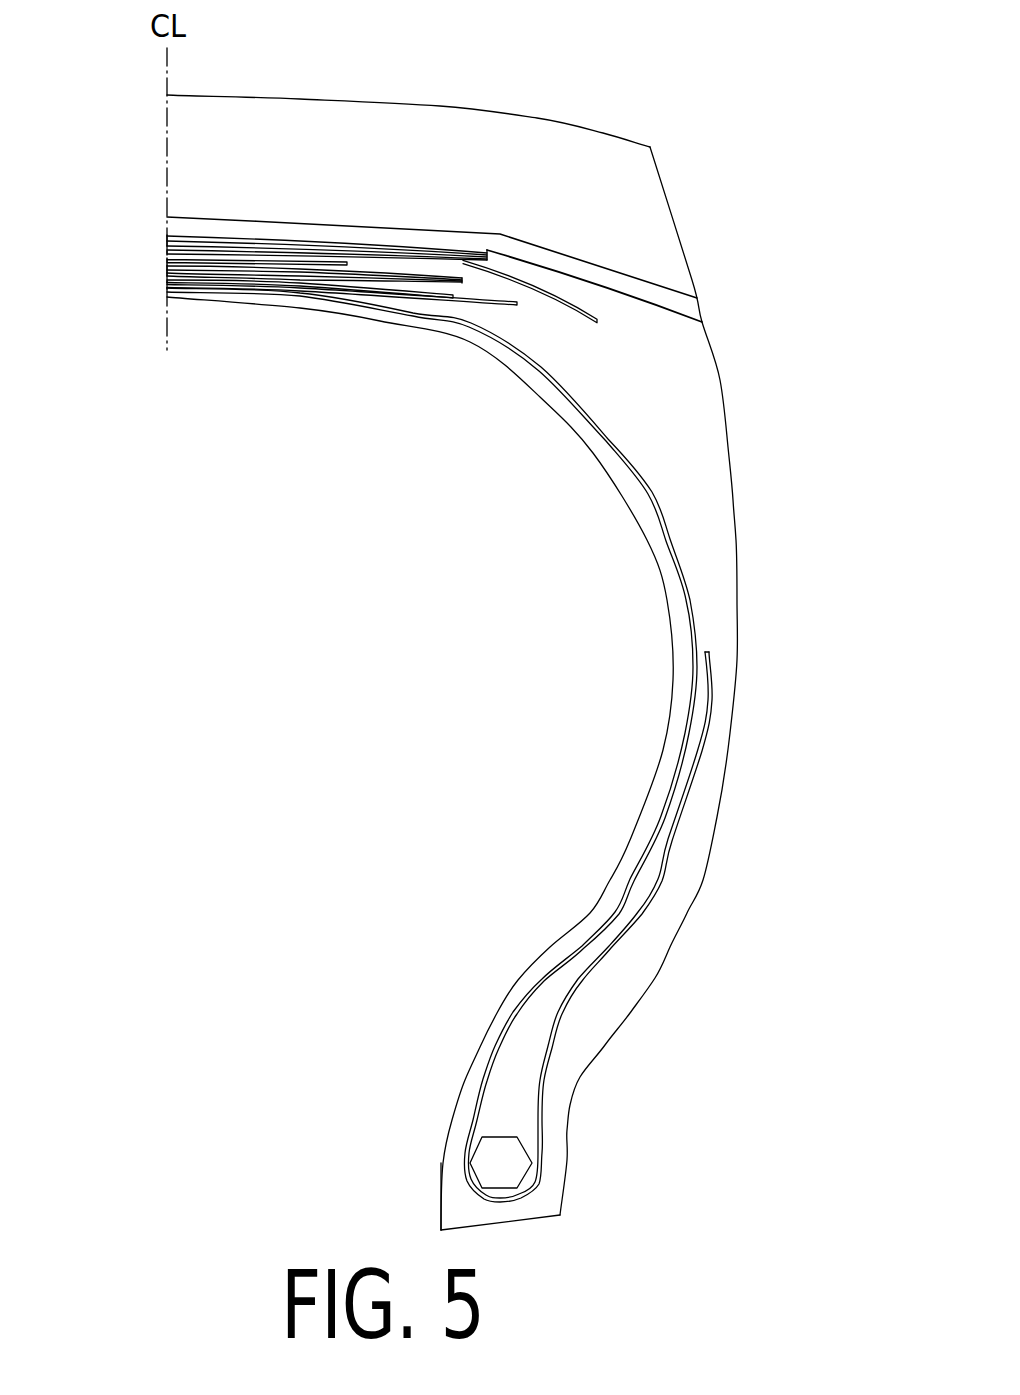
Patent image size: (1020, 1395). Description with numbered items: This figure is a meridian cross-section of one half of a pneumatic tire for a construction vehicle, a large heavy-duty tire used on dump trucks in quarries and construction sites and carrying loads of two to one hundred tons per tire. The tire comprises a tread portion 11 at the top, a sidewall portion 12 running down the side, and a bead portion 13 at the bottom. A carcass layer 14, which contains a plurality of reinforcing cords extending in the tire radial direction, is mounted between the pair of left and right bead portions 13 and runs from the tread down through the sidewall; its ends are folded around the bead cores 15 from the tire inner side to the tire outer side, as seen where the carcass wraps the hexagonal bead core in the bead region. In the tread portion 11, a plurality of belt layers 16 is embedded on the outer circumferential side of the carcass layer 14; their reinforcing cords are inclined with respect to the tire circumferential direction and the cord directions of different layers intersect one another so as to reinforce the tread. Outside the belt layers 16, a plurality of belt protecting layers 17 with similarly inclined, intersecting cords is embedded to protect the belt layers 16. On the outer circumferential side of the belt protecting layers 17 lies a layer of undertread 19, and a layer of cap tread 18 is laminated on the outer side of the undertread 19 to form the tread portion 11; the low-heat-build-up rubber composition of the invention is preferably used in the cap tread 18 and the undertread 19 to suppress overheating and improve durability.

The tread portion 11 is at (266, 98).
The sidewall portion 12 is at (733, 507).
The bead portion 13 is at (567, 1167).
The carcass layer 14 is at (607, 443).
The bead core 15 is at (478, 1165).
The belt layer 16 is at (340, 265).
The belt protecting layer 17 is at (490, 251).
The cap tread 18 is at (195, 148).
The undertread 19 is at (195, 232).